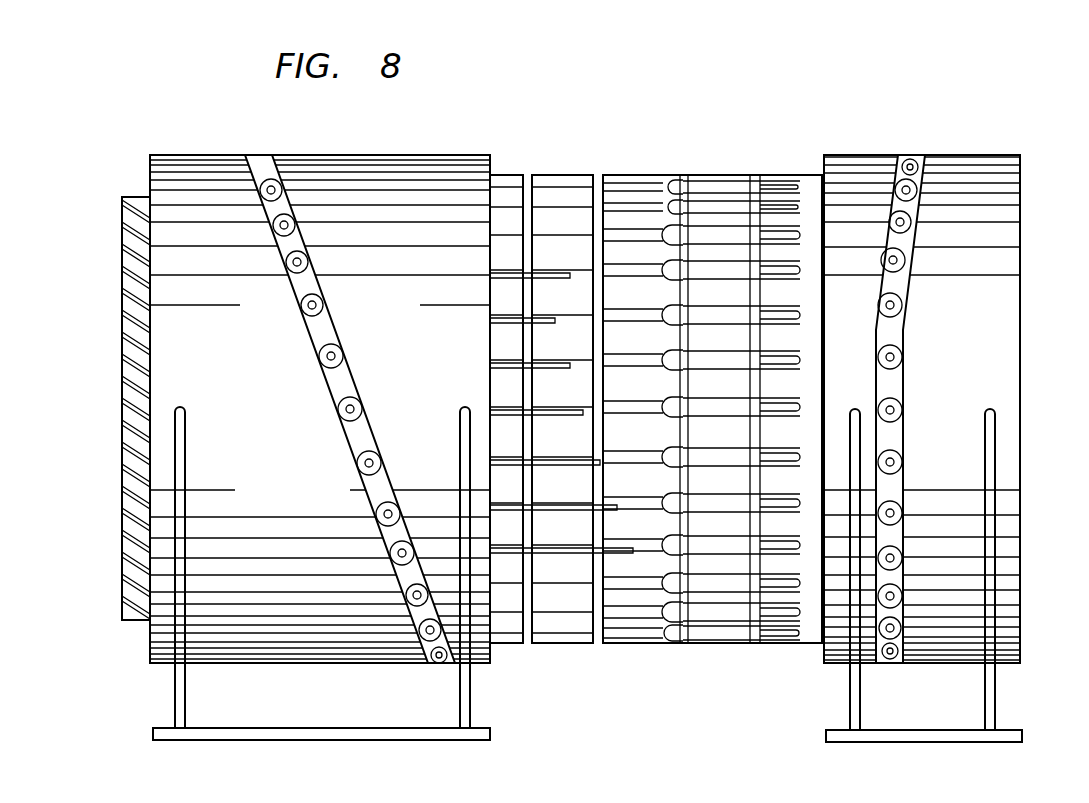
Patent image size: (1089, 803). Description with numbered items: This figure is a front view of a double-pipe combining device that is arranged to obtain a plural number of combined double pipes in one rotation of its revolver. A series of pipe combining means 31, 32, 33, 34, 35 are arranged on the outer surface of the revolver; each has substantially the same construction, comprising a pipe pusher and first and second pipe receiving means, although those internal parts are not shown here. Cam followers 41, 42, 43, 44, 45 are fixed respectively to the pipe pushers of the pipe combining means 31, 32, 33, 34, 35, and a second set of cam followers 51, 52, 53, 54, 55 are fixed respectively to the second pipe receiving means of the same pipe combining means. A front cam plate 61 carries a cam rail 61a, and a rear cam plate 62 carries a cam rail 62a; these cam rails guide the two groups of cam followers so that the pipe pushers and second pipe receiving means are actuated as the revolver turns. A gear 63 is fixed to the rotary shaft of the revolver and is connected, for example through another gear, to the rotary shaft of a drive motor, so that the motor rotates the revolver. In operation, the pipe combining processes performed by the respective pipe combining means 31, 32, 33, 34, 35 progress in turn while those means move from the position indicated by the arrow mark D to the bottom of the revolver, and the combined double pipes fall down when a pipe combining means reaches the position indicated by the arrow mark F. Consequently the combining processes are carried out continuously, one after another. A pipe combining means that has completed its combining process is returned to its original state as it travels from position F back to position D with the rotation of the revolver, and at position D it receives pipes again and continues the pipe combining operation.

The front cam plate 61 is at (437, 155).
The cam rail 61a is at (318, 298).
The rear cam plate 62 is at (968, 155).
The cam rail 62a is at (905, 300).
The gear 63 is at (122, 222).
The cam follower 41 is at (344, 356).
The cam follower 42 is at (362, 409).
The cam follower 43 is at (381, 461).
The cam follower 44 is at (400, 512).
The cam follower 45 is at (412, 553).
The pipe combining means 31 is at (647, 358).
The pipe combining means 32 is at (647, 406).
The pipe combining means 33 is at (647, 456).
The pipe combining means 34 is at (647, 502).
The pipe combining means 35 is at (647, 545).
The cam follower 51 is at (903, 357).
The cam follower 52 is at (903, 410).
The cam follower 53 is at (903, 462).
The cam follower 54 is at (903, 513).
The cam follower 55 is at (903, 558).
The position D is at (629, 168).
The position F is at (637, 652).